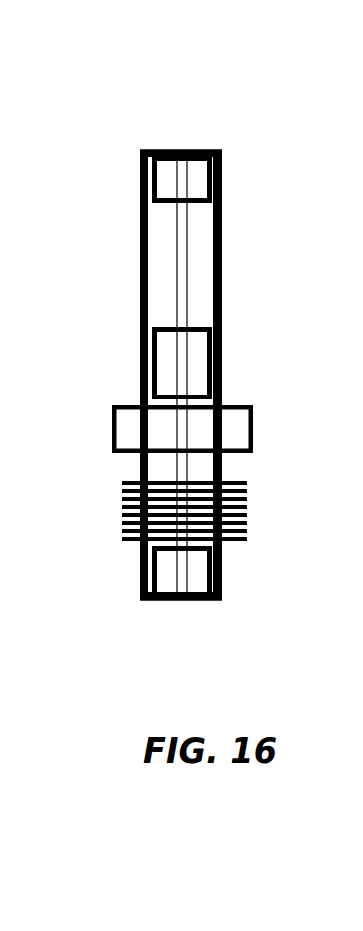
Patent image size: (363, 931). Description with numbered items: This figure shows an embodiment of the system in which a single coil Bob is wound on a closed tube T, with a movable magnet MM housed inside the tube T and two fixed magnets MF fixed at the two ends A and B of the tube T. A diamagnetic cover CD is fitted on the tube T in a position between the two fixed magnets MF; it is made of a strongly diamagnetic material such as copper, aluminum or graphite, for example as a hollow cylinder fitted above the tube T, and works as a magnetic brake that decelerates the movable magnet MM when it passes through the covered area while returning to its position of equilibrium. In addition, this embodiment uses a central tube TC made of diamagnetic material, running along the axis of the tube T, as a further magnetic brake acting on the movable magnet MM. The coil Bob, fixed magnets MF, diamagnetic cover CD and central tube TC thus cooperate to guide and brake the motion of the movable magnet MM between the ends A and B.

The end A is at (168, 149).
The end B is at (196, 601).
The tube T is at (163, 258).
The central tube TC is at (180, 267).
The fixed magnet MF is at (199, 181).
The movable magnet MM is at (165, 345).
The diamagnetic cover CD is at (236, 428).
The coil Bob is at (126, 513).